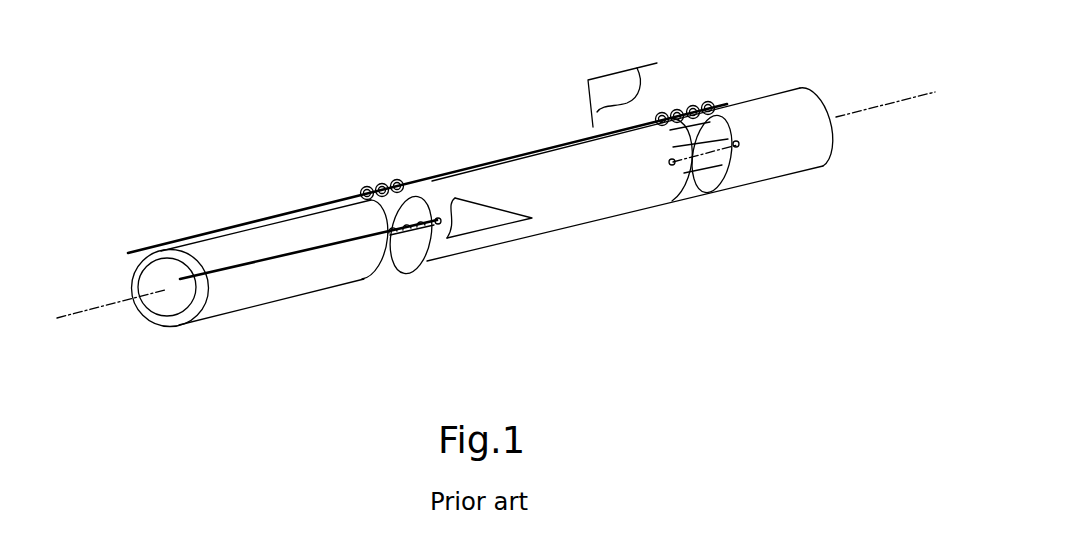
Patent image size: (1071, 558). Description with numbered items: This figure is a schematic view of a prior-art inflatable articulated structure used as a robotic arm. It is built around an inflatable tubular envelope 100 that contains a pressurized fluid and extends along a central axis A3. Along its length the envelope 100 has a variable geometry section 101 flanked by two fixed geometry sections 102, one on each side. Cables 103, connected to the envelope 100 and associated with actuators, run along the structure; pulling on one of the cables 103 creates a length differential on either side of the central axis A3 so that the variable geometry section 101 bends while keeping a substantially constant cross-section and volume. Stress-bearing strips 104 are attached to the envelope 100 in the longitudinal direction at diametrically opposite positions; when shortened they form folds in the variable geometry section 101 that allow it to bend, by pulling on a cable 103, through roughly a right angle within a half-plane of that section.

The inflatable tubular envelope 100 is at (238, 85).
The variable geometry section 101 is at (405, 258).
The fixed geometry section 102 is at (253, 306).
The cable 103 is at (142, 250).
The strip 104 is at (405, 206).
The central axis A3 is at (476, 212).